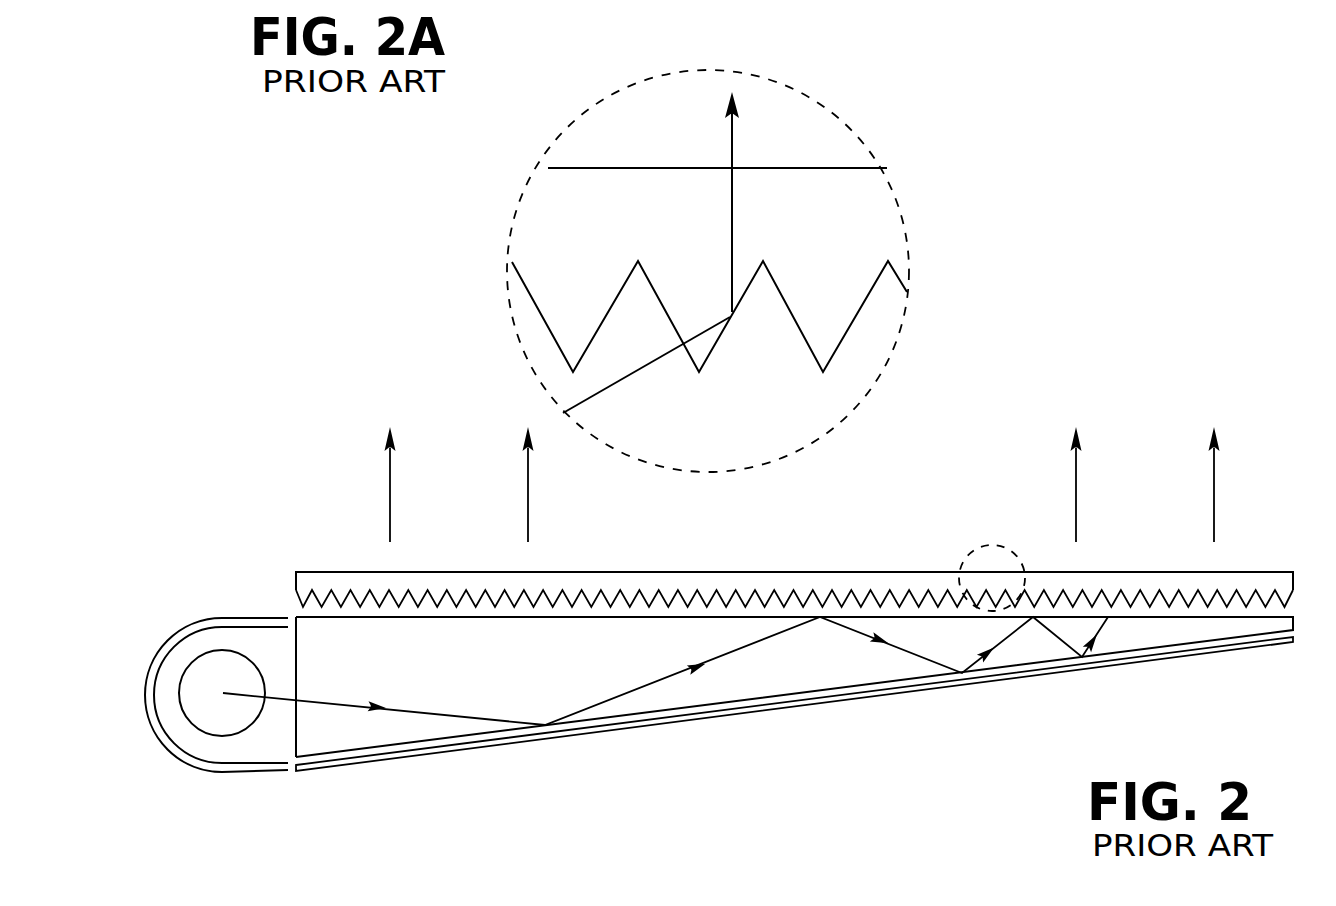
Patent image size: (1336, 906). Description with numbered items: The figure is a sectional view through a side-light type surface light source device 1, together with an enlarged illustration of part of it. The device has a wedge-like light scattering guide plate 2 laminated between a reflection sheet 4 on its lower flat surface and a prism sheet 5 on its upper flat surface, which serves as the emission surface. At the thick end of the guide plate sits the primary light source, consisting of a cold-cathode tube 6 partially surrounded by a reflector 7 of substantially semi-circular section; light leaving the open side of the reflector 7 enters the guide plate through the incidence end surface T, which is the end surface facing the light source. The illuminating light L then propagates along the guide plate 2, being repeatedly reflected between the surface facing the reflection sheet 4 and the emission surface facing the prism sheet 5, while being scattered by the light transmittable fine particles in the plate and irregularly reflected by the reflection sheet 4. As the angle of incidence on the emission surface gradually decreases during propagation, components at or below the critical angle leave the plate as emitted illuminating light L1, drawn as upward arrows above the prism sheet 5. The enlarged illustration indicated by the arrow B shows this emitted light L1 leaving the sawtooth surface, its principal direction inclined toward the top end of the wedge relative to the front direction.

In FIG. 2, the side-light type surface light source device 1 is at (1060, 265).
In FIG. 2, the light scattering guide plate 2 is at (794, 731).
In FIG. 2, the reflection sheet 4 is at (794, 741).
In FIG. 2A, the prism sheet 5 is at (729, 257).
In FIG. 2, the prism sheet 5 is at (794, 555).
In FIG. 2, the cold-cathode tube 6 is at (222, 747).
In FIG. 2, the reflector 7 is at (183, 731).
In FIG. 2, the arrow indicating enlarged illustration B is at (932, 529).
In FIG. 2, the illuminating light L is at (665, 730).
In FIG. 2A, the emitted illuminating light L1 is at (651, 267).
In FIG. 2, the emitted illuminating light L1 is at (843, 484).
In FIG. 2, the incidence end surface T is at (356, 687).